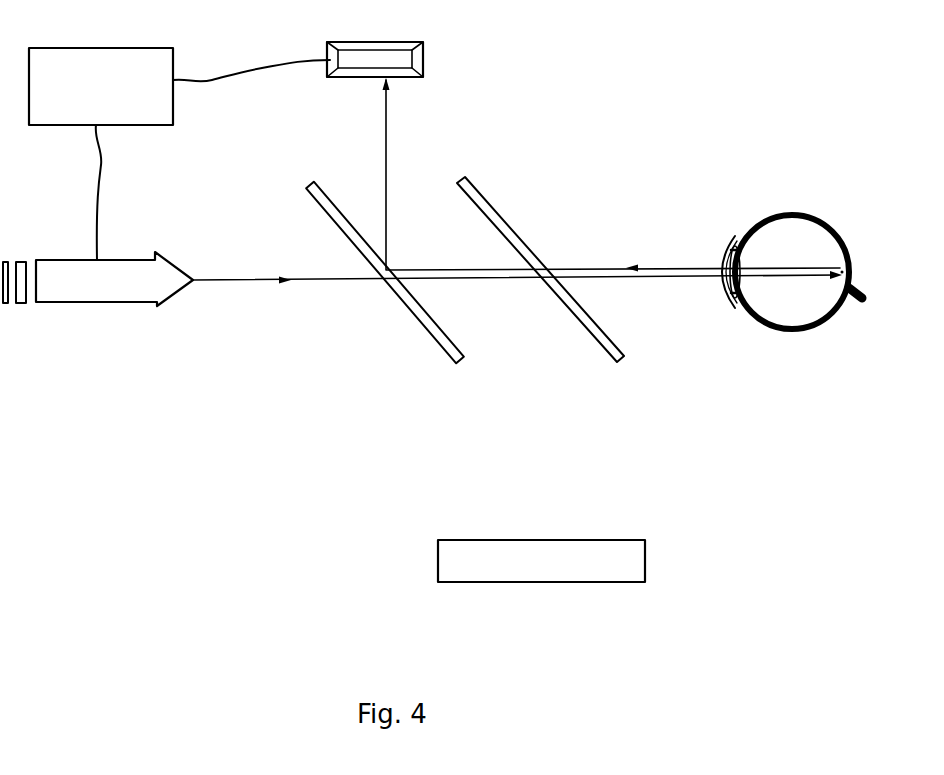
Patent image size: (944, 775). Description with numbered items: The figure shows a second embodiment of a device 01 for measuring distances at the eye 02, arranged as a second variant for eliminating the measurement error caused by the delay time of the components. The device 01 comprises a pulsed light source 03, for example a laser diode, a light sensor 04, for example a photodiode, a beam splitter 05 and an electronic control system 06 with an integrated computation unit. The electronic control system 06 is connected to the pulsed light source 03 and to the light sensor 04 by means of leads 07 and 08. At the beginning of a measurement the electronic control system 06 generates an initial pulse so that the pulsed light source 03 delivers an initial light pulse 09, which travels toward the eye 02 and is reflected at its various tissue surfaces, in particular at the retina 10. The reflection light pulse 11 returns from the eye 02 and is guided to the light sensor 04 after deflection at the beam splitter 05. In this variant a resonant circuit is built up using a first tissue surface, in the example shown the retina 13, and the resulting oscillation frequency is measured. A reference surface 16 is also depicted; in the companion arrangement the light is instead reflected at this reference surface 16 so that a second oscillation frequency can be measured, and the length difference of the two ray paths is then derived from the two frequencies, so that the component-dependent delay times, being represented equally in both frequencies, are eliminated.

The device for measuring distances 01 is at (468, 83).
The eye 02 is at (797, 212).
The pulsed light source 03 is at (95, 296).
The light sensor 04 is at (378, 45).
The beam splitter 05 is at (443, 350).
The electronic control system 06 is at (108, 60).
The lead 07 is at (100, 200).
The lead 08 is at (262, 70).
The initial light pulse 09 is at (488, 282).
The retina 10 is at (834, 263).
The reflection light pulse 11 is at (388, 217).
The retina 13 is at (720, 250).
The reference surface 16 is at (619, 543).